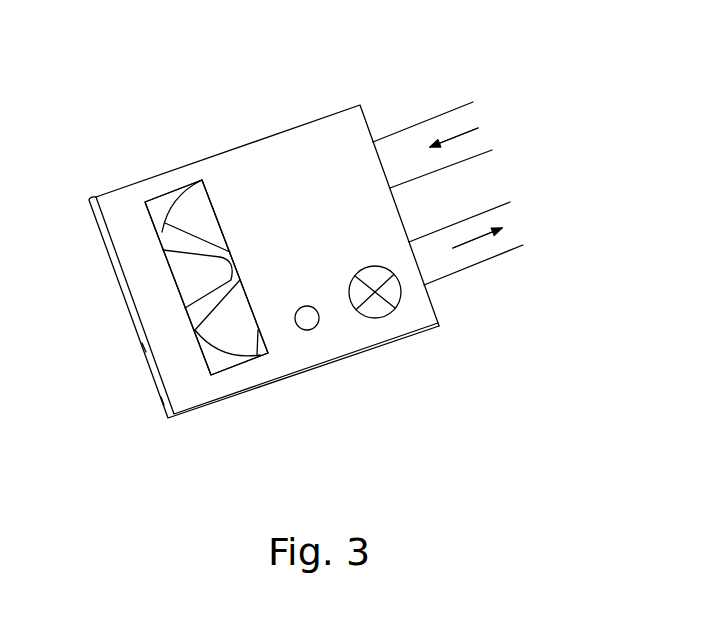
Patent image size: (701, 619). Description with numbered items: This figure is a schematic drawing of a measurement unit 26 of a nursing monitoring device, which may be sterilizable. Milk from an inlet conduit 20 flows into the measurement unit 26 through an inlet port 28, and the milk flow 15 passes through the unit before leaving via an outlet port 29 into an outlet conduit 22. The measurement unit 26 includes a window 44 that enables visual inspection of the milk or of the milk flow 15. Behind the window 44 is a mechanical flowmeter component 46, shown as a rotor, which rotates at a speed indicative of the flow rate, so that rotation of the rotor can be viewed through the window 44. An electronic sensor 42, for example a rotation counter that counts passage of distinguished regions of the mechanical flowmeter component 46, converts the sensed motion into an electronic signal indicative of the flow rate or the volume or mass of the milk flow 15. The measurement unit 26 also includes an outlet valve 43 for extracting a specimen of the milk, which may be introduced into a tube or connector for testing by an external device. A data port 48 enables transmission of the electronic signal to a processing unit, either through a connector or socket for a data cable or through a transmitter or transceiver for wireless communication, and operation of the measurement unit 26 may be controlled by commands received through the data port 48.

The milk flow 15 is at (472, 237).
The inlet conduit 20 is at (443, 110).
The outlet conduit 22 is at (497, 258).
The measurement unit 26 is at (250, 107).
The inlet port 28 is at (379, 160).
The outlet port 29 is at (418, 265).
The sensor 42 is at (307, 317).
The outlet valve 43 is at (383, 318).
The window 44 is at (218, 363).
The mechanical flowmeter component 46 is at (198, 213).
The data port 48 is at (149, 373).